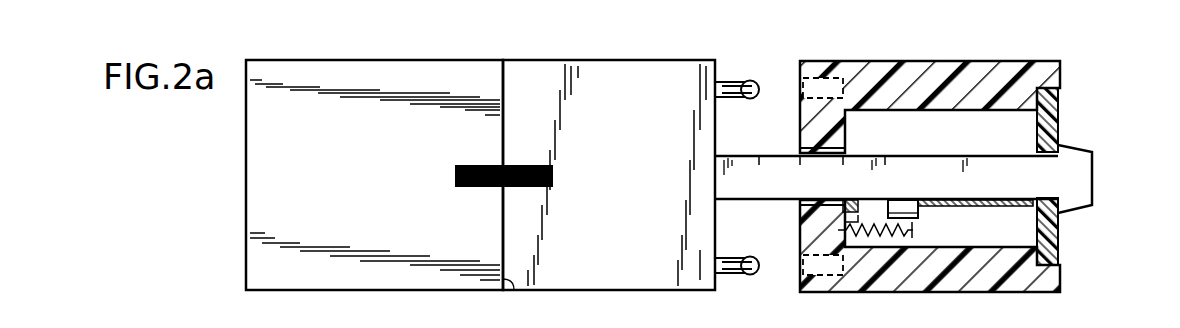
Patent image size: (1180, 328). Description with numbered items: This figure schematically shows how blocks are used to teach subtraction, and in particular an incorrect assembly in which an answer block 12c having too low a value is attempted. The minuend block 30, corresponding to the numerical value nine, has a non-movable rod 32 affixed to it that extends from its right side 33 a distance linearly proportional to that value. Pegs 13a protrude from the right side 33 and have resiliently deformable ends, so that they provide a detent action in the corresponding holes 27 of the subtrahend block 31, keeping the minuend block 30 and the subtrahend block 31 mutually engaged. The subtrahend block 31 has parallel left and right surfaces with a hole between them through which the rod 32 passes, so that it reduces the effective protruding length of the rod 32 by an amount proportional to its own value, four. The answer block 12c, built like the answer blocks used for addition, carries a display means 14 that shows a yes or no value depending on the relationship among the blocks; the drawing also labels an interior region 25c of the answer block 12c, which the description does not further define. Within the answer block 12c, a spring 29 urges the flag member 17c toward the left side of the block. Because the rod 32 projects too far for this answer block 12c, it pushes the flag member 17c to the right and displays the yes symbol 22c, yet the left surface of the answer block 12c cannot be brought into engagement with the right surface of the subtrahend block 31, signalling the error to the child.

The minuend block 30 is at (377, 78).
The subtrahend block 31 is at (622, 72).
The right side 33 is at (508, 289).
The pegs 13a is at (725, 82).
The non-movable rod 32 is at (777, 165).
The "yes" symbol 22c is at (1078, 190).
The answer block 12c is at (932, 75).
The display means 14 is at (1100, 150).
The chamber 25c is at (910, 147).
The holes 27 is at (821, 70).
The flag member 17c is at (977, 186).
The springs 29 is at (872, 238).